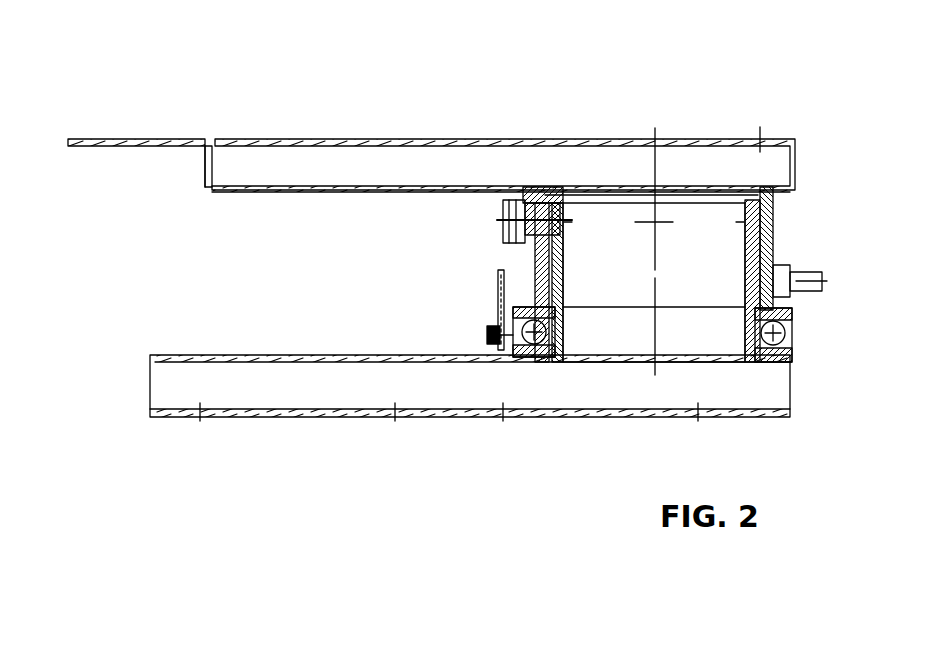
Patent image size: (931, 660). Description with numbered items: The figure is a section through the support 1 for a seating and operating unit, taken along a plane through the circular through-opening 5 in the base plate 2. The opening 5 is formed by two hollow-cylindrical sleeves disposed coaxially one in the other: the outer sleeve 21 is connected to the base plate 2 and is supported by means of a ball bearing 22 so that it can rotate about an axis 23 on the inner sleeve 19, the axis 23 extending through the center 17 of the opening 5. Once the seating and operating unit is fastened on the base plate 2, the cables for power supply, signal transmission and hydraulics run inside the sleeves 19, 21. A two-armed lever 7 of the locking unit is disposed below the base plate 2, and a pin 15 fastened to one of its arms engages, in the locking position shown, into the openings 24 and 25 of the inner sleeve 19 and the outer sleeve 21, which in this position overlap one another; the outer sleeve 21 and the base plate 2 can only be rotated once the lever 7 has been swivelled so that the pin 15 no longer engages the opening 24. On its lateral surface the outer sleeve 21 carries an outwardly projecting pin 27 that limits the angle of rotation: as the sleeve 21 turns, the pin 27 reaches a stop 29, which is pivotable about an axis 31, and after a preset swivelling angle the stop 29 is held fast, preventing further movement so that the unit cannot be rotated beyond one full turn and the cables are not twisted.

The support 1 is at (754, 106).
The base plate 2 is at (178, 138).
The circular through-opening 5 is at (765, 137).
The two-armed lever 7 is at (505, 228).
The pin 15 is at (553, 187).
The center of the opening 17 is at (655, 185).
The inner sleeve 19 is at (768, 248).
The outer sleeve 21 is at (767, 212).
The ball bearing 22 is at (793, 350).
The axis 23 is at (655, 330).
The opening of the inner sleeve 24 is at (537, 270).
The opening of the outer sleeve 25 is at (538, 252).
The outwardly projecting pin 27 is at (812, 293).
The stop 29 is at (488, 333).
The axis of the stop 31 is at (512, 338).